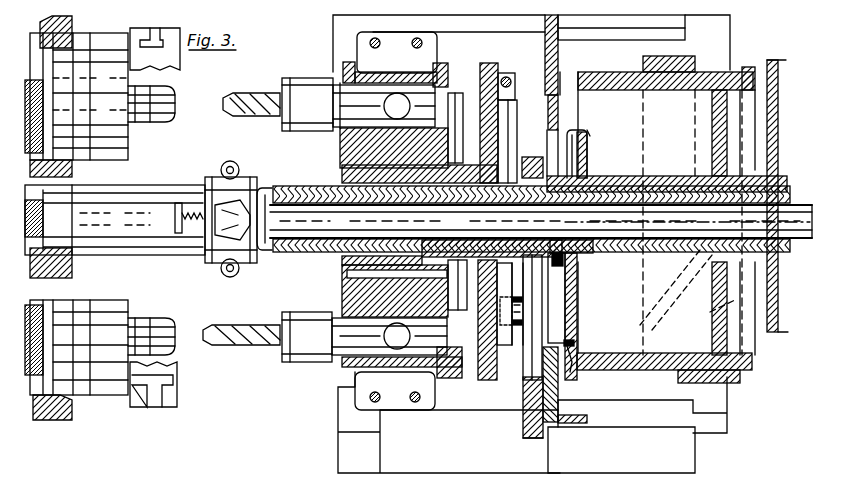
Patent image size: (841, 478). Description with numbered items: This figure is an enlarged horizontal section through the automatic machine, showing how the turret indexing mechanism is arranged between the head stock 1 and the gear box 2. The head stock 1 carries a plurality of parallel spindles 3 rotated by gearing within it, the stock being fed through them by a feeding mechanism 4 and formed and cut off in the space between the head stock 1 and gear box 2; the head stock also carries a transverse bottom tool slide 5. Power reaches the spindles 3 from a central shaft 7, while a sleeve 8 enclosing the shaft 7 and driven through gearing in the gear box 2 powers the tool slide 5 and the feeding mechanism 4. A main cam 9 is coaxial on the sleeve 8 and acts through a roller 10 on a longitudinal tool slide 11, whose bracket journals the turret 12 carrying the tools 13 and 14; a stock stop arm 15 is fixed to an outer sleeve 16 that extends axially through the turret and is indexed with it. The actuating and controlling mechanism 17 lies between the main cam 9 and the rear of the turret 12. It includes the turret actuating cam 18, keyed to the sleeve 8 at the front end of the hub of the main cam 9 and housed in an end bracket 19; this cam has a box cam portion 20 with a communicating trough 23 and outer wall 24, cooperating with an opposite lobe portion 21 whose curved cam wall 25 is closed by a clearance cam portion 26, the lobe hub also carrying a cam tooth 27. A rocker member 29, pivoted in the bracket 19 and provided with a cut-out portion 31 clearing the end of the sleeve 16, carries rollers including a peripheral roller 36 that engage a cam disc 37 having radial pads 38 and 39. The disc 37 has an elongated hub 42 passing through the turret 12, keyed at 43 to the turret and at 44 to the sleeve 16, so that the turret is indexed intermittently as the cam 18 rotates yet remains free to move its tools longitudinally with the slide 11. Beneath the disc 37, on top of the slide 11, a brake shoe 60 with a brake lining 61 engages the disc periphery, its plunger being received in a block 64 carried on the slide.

The head stock 1 is at (68, 28).
The gear box 2 is at (773, 65).
The spindles 3 is at (103, 58).
The feeding mechanism 4 is at (155, 49).
The transverse bottom tool slide 5 is at (165, 396).
The central shaft 7 is at (798, 215).
The sleeve 8 is at (294, 198).
The main cam 9 is at (693, 71).
The cam follower or roller 10 is at (690, 262).
The longitudinal tool slide 11 is at (720, 426).
The turret 12 is at (345, 370).
The tool 13 is at (248, 346).
The tool 14 is at (248, 92).
The stock stop arm 15 is at (213, 259).
The outer sleeve 16 is at (268, 200).
The actuating and controlling mechanism 17 is at (518, 405).
The turret actuating cam 18 is at (606, 176).
The end bracket 19 is at (558, 57).
The box cam portion 20 is at (584, 137).
The lobe portion 21 is at (577, 309).
The communicating trough 23 is at (575, 155).
The outer wall 24 is at (568, 133).
The curved cam wall 25 is at (571, 372).
The clearance cam portion 26 is at (568, 330).
The cam tooth 27 is at (558, 283).
The rocker member 29 is at (536, 440).
The cut-out portion 31 is at (528, 360).
The roller 36 is at (518, 322).
The cam disc 37 is at (490, 380).
The radial pads 38 is at (505, 292).
The radial pads 39 is at (508, 128).
The elongated hub 42 is at (348, 176).
The key 43 is at (348, 286).
The key 44 is at (350, 258).
The brake shoe 60 is at (500, 100).
The brake lining 61 is at (469, 130).
The block 64 is at (510, 78).